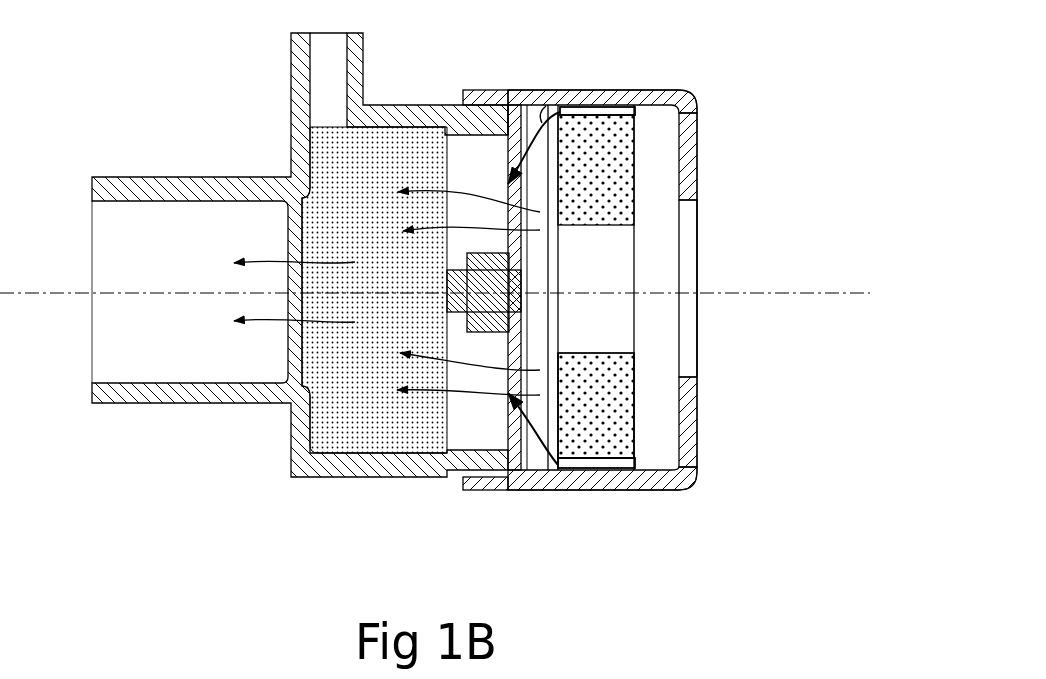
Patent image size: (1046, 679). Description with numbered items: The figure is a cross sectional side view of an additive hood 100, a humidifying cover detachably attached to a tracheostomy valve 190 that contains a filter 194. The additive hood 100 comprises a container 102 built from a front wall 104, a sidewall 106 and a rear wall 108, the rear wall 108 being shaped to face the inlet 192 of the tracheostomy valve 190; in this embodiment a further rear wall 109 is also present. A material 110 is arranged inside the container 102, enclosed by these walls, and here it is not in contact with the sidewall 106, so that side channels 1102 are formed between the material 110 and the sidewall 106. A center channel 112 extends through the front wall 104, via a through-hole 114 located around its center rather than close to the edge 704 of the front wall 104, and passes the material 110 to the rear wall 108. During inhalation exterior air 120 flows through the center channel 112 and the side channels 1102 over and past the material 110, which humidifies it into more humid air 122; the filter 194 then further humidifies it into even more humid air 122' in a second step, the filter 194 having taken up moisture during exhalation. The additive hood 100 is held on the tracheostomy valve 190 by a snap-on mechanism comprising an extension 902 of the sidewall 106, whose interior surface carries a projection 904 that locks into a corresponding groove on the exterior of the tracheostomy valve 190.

The additive hood 100 is at (707, 95).
The container 102 is at (555, 495).
The front wall 104 is at (702, 469).
The sidewall 106 is at (657, 80).
The rear wall 108 is at (546, 106).
The further rear wall 109 is at (568, 403).
The material 110 is at (613, 443).
The channel 112 is at (730, 262).
The through-hole 114 is at (699, 318).
The air 120 is at (605, 257).
The more humid air 122 is at (468, 295).
The even more humid air 122' is at (255, 293).
The tracheostomy valve 190 is at (291, 405).
The inlet 192 is at (532, 168).
The filter 194 is at (382, 388).
The edge 704 is at (705, 140).
The extension 902 is at (493, 87).
The projection 904 is at (503, 105).
The side channel 1102 is at (636, 119).